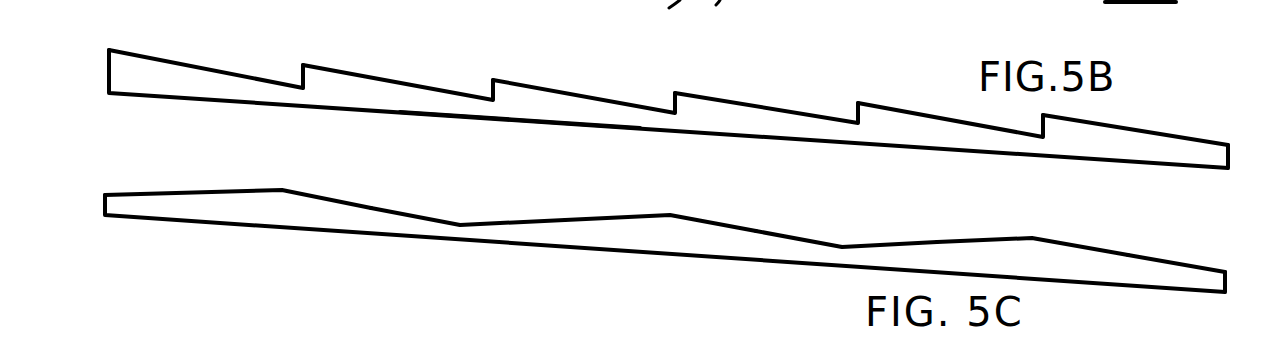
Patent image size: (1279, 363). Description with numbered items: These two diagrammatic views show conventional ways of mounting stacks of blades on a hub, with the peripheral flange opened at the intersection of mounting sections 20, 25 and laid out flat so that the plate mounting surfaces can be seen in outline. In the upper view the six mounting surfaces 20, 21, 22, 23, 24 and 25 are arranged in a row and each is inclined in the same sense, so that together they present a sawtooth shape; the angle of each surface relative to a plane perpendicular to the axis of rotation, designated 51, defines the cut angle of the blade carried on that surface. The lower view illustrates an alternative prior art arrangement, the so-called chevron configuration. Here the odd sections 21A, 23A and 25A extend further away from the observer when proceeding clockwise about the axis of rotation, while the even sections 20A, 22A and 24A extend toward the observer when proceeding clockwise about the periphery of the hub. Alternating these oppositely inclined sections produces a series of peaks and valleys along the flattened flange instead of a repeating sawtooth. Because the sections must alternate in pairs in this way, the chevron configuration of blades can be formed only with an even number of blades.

In FIG. 5B, the mounting section 20 is at (175, 62).
In FIG. 5B, the mounting section 21 is at (375, 77).
In FIG. 5B, the mounting section 22 is at (562, 90).
In FIG. 5B, the mounting section 23 is at (765, 100).
In FIG. 5B, the mounting section 24 is at (900, 105).
In FIG. 5B, the mounting section 25 is at (1127, 123).
In FIG. 5B, the plane perpendicular to the axis of rotation 51 is at (507, 132).
In FIG. 5C, the even section 20A is at (145, 190).
In FIG. 5C, the section 21A is at (362, 198).
In FIG. 5C, the even section 22A is at (577, 223).
In FIG. 5C, the section 23A is at (747, 230).
In FIG. 5C, the even section 24A is at (927, 247).
In FIG. 5C, the section 25A is at (1098, 250).